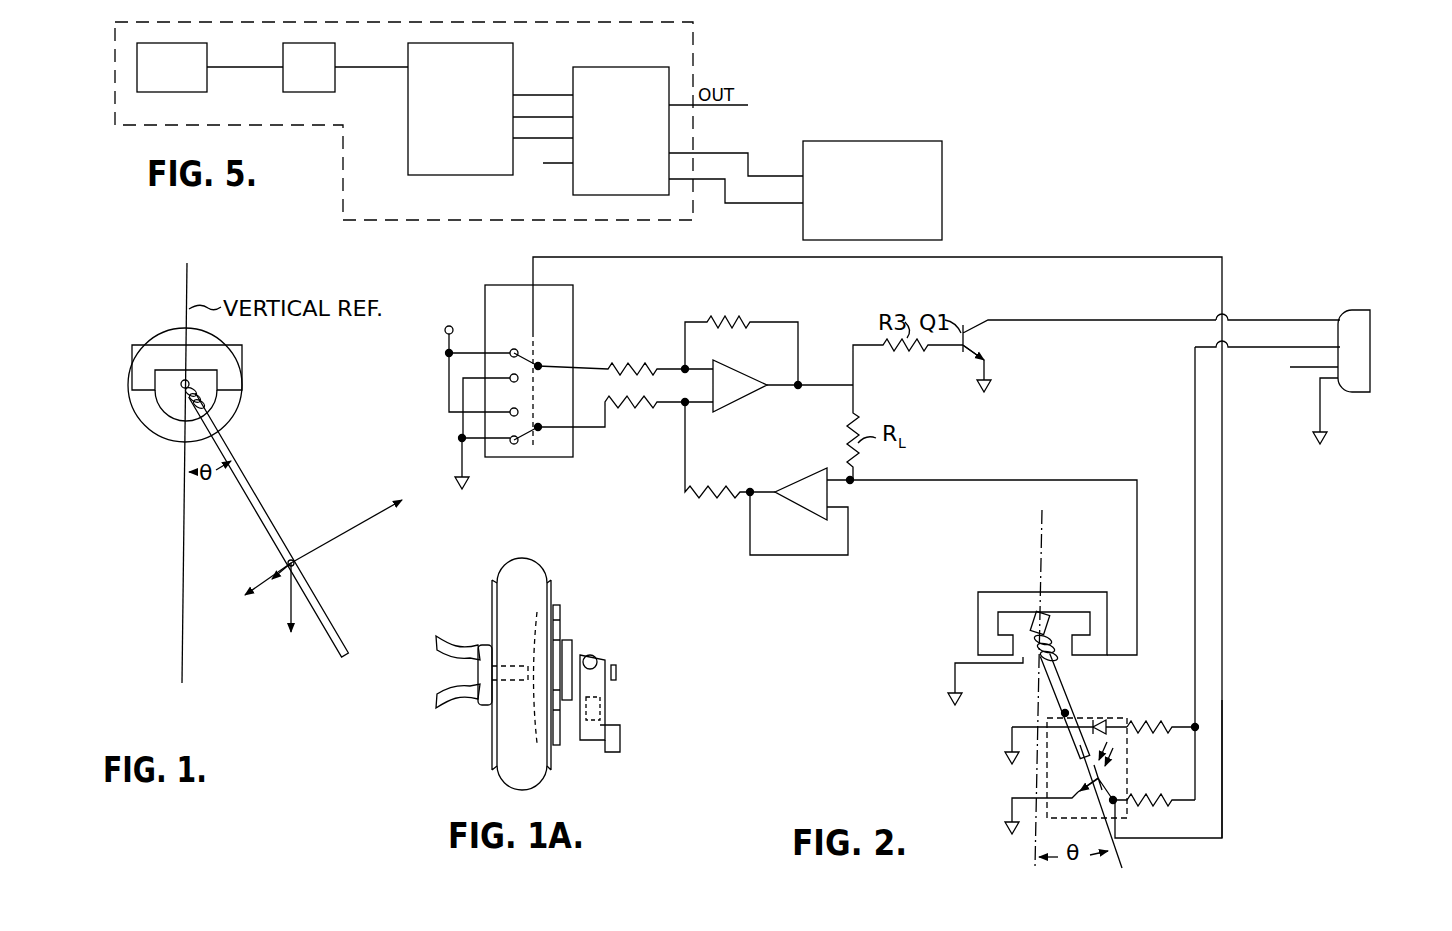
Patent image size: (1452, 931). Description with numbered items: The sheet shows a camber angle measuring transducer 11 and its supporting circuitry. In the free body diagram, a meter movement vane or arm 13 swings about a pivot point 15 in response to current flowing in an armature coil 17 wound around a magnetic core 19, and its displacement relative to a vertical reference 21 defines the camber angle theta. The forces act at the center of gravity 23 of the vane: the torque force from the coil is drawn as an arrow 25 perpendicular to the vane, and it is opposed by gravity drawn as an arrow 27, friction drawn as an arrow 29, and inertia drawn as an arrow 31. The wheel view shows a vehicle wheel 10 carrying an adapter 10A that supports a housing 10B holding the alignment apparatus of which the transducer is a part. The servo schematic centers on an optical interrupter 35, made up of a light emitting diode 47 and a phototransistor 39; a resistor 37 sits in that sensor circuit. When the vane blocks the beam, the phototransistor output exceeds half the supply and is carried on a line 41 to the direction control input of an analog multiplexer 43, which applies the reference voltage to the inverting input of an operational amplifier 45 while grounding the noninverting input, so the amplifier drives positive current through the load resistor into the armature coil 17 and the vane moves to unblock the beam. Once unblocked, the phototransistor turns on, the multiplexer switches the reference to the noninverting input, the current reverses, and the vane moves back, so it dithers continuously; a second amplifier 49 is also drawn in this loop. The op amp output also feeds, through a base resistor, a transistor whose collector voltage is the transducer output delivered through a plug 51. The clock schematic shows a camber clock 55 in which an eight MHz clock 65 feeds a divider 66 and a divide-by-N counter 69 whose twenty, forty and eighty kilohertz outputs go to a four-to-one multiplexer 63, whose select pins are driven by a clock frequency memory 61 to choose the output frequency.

In FIG. 1A, the vehicle wheel 10 is at (488, 773).
In FIG. 1A, the adapter 10A is at (592, 607).
In FIG. 1A, the housing 10B is at (602, 690).
In FIG. 1, the camber angle measuring transducer 11 is at (118, 367).
In FIG. 2, the camber angle measuring transducer 11 is at (964, 637).
In FIG. 1, the meter movement vane 13 is at (229, 446).
In FIG. 2, the meter movement vane 13 is at (1046, 678).
In FIG. 1, the pivot point 15 is at (192, 390).
In FIG. 2, the pivot point 15 is at (1040, 615).
In FIG. 1, the armature coil 17 is at (186, 396).
In FIG. 2, the armature coil 17 is at (1053, 623).
In FIG. 1, the magnetic core 19 is at (158, 358).
In FIG. 2, the magnetic core 19 is at (985, 599).
In FIG. 1, the vertical reference 21 is at (189, 290).
In FIG. 2, the vertical reference 21 is at (1045, 524).
In FIG. 1, the center of gravity 23 is at (298, 556).
In FIG. 1, the arrow representing torque force 25 is at (382, 492).
In FIG. 1, the arrow representing gravity force 27 is at (290, 612).
In FIG. 1, the arrow representing frictional force 29 is at (283, 560).
In FIG. 1, the arrow representing inertial force 31 is at (266, 585).
In FIG. 2, the optical interrupter 35 is at (1118, 708).
In FIG. 2, the resistor 37 is at (1193, 760).
In FIG. 2, the phototransistor 39 is at (1082, 776).
In FIG. 2, the line 41 is at (1222, 733).
In FIG. 2, the analog multiplexer 43 is at (573, 323).
In FIG. 2, the operational amplifier 45 is at (735, 363).
In FIG. 2, the light emitting diode 47 is at (1097, 719).
In FIG. 2, the amplifier 49 is at (808, 470).
In FIG. 2, the plug 51 is at (1362, 310).
In FIG. 5, the camber clock 55 is at (343, 194).
In FIG. 5, the clock frequency memory 61 is at (880, 112).
In FIG. 5, the 4:1 multiplexer 63 is at (573, 190).
In FIG. 5, the eight MHz clock 65 is at (196, 92).
In FIG. 5, the divide-by-six counter 66 is at (320, 92).
In FIG. 5, the divide-by-N counter 69 is at (494, 175).